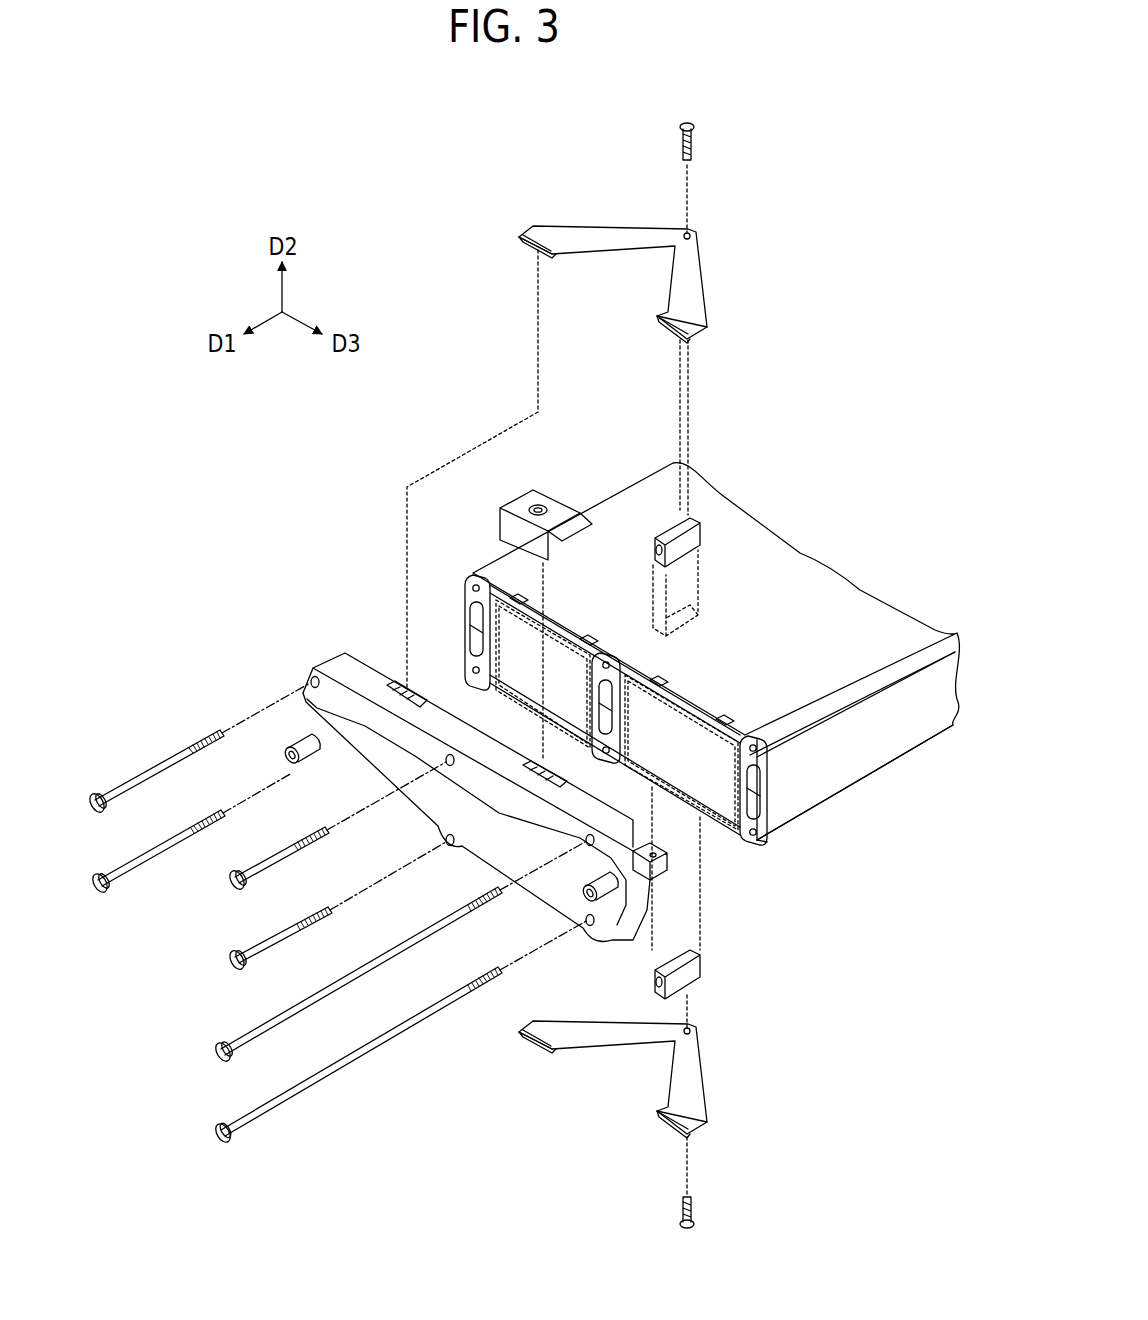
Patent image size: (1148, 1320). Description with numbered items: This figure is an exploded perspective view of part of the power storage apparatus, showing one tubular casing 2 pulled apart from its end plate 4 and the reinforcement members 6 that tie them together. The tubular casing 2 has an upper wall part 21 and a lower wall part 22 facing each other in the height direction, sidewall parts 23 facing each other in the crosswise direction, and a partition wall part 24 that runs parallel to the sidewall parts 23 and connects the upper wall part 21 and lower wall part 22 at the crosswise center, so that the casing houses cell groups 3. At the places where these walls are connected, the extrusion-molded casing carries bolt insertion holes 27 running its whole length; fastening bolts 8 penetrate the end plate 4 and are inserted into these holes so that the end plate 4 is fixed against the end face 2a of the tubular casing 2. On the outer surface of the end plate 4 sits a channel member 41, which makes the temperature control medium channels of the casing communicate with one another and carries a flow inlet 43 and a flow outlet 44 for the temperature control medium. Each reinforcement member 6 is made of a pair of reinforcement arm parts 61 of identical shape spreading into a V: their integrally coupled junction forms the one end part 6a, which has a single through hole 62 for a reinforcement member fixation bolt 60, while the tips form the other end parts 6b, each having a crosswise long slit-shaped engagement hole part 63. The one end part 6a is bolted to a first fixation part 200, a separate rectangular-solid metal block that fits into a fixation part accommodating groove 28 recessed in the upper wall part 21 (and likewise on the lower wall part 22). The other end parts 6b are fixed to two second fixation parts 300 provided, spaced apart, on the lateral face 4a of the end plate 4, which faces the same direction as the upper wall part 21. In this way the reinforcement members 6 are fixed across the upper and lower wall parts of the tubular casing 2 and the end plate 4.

The tubular casing 2 is at (823, 520).
The end face 2a is at (762, 792).
The cell group 3 is at (633, 714).
The end plate 4 is at (459, 755).
The lateral face 4a is at (340, 655).
The reinforcement member 6 is at (641, 636).
The one end part 6a is at (700, 1034).
The other end part 6b is at (558, 1051).
The fastening bolt 8 is at (218, 1130).
The upper wall part 21 is at (870, 595).
The lower wall part 22 is at (713, 822).
The sidewall part 23 is at (880, 745).
The partition wall part 24 is at (608, 754).
The bolt insertion hole 27 is at (760, 760).
The fixation part accommodating groove 28 is at (700, 588).
The channel member 41 is at (343, 785).
The flow inlet 43 is at (585, 890).
The flow outlet 44 is at (290, 745).
The reinforcement member fixation bolt 60 is at (693, 1200).
The reinforcement arm part 61 is at (705, 1068).
The through hole 62 is at (692, 1030).
The engagement hole part 63 is at (662, 1116).
The first fixation part 200 is at (700, 518).
The second fixation part 300 is at (397, 668).